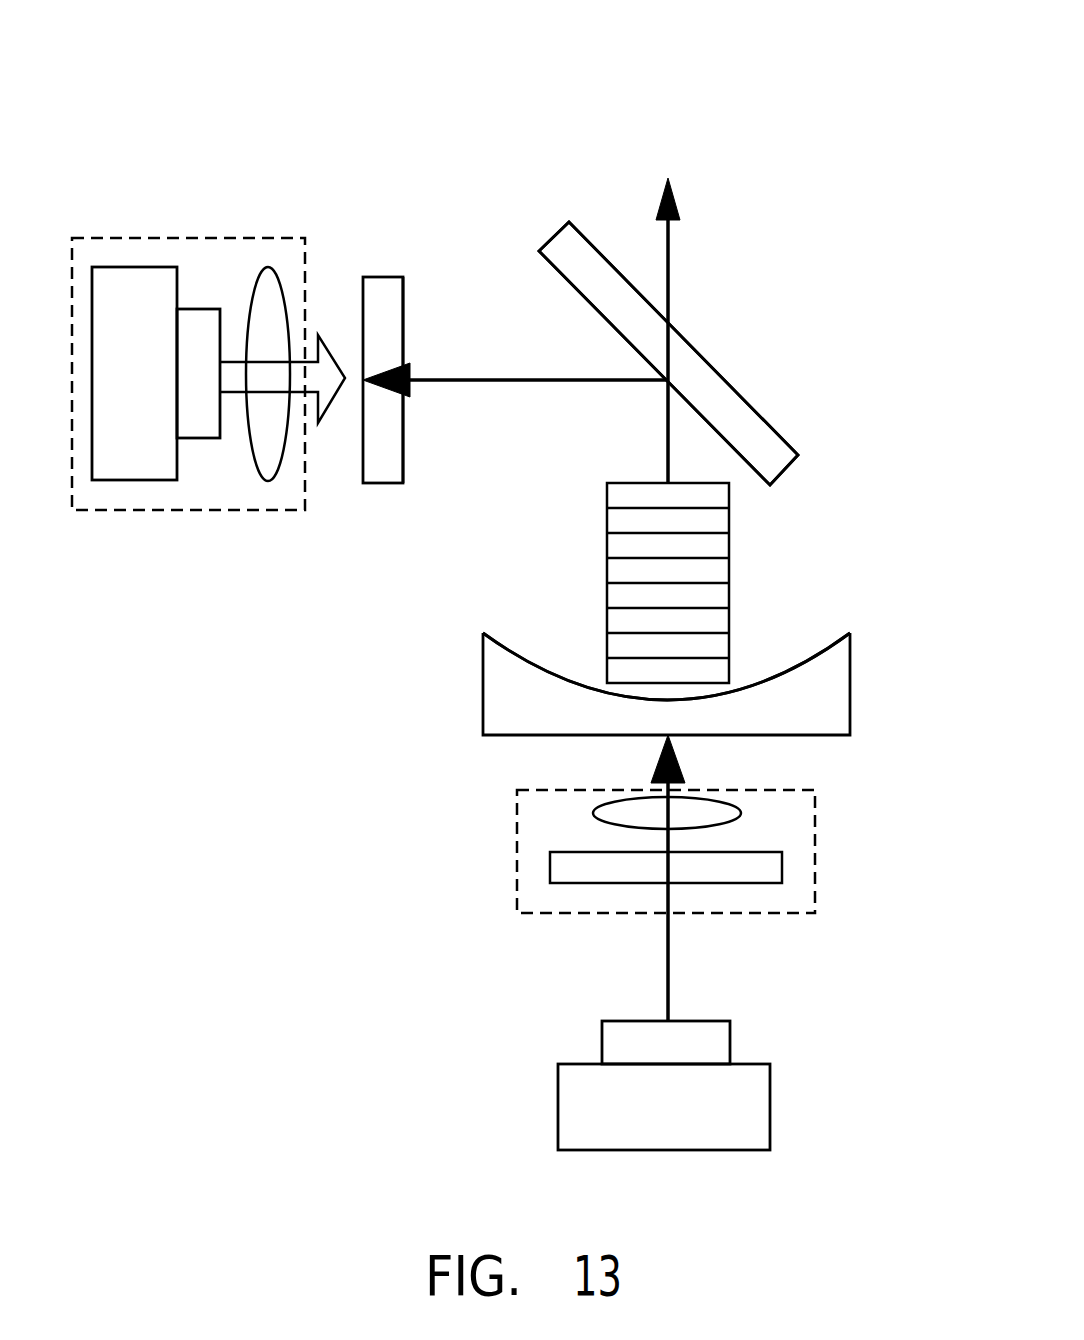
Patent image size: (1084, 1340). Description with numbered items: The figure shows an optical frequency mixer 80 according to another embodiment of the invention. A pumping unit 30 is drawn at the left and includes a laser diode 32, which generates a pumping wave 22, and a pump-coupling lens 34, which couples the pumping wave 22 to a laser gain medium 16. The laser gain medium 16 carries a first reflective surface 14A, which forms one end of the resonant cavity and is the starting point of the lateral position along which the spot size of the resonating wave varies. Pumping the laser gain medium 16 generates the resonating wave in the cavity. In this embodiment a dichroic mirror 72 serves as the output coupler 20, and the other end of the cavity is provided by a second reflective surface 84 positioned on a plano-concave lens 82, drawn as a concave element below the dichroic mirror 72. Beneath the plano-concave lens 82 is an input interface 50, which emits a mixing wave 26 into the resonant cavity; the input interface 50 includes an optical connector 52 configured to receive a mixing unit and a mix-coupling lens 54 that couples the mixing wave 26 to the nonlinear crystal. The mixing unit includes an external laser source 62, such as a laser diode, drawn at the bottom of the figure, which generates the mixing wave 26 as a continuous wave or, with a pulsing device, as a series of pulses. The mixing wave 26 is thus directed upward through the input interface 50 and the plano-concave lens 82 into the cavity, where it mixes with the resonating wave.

The optical frequency mixer 80 is at (760, 108).
The pumping unit 30 is at (203, 238).
The laser diode 32 is at (136, 267).
The pump-coupling lens 34 is at (268, 268).
The pumping wave 22 is at (334, 405).
The first reflective surface 14A is at (385, 277).
The laser gain medium 16 is at (405, 293).
The output coupler 20 is at (745, 355).
The dichroic mirror 72 is at (777, 428).
The plano-concave lens 82 is at (852, 685).
The second reflective surface 84 is at (817, 670).
The mixing wave 26 is at (655, 765).
The input interface 50 is at (815, 853).
The mix-coupling lens 54 is at (595, 815).
The optical connector 52 is at (550, 866).
The external laser source 62 is at (770, 1105).